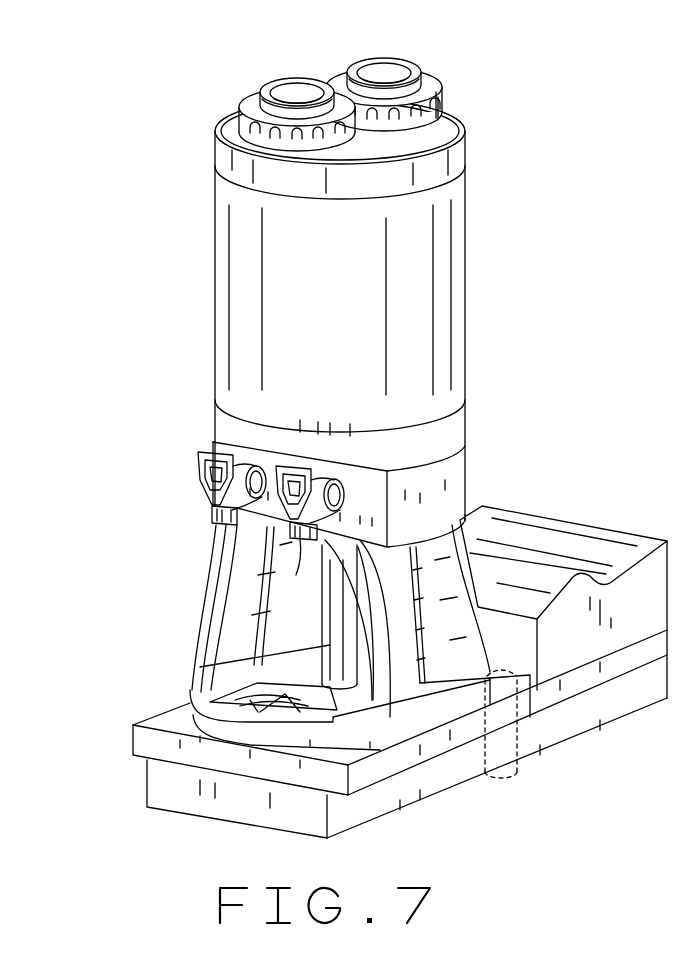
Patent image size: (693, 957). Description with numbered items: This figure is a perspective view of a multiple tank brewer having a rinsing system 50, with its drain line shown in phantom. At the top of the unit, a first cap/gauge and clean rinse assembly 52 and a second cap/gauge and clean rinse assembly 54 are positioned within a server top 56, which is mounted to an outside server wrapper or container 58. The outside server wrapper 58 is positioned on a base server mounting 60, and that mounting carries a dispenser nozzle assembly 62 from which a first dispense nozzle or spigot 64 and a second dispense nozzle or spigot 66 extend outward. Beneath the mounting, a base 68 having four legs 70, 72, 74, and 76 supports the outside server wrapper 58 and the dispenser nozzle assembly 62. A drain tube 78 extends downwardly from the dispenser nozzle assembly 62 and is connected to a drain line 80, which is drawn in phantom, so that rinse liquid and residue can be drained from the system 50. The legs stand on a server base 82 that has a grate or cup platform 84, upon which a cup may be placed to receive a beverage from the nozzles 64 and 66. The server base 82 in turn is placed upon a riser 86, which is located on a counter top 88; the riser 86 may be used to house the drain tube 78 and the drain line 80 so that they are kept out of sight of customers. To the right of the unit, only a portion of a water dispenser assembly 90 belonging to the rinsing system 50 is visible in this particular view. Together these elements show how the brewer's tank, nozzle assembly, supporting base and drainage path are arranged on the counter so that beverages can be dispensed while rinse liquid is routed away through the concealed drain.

The multiple tank brewer having a rinsing system 50 is at (498, 208).
The first cap/gauge and clean rinse assembly 52 is at (253, 70).
The second cap/gauge and clean rinse assembly 54 is at (350, 47).
The server top 56 is at (441, 125).
The outside server wrapper 58 is at (242, 274).
The base server mounting 60 is at (443, 430).
The dispenser nozzle assembly 62 is at (350, 497).
The first dispense nozzle 64 is at (190, 483).
The second dispense nozzle 66 is at (272, 538).
The base 68 is at (180, 622).
The leg 70 is at (212, 603).
The leg 72 is at (388, 682).
The leg 74 is at (447, 623).
The leg 76 is at (282, 598).
The drain tube 78 is at (323, 648).
The drain line 80 is at (507, 773).
The server base 82 is at (190, 702).
The grate 84 is at (232, 705).
The riser 86 is at (367, 772).
The counter top 88 is at (250, 812).
The water dispenser assembly 90 is at (620, 553).